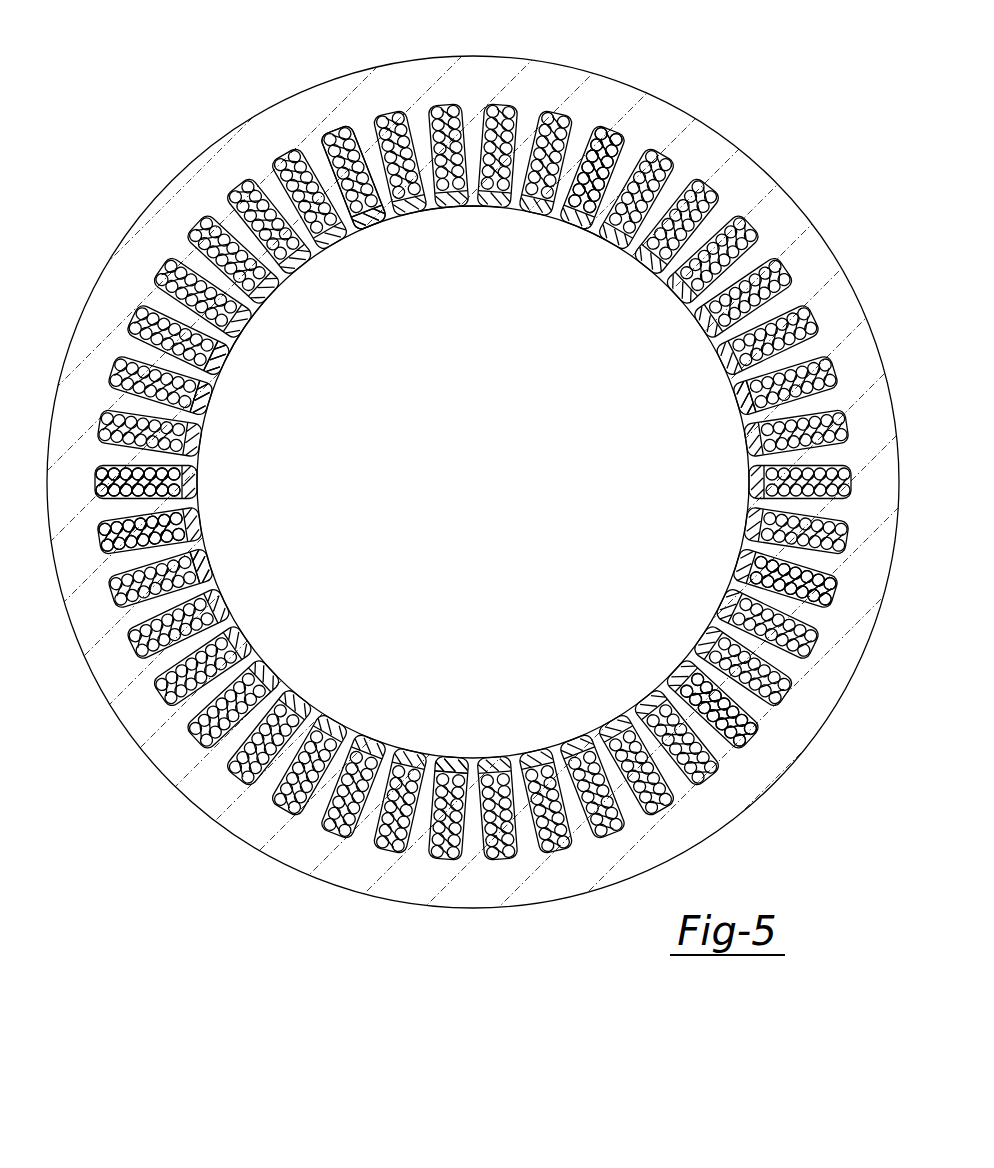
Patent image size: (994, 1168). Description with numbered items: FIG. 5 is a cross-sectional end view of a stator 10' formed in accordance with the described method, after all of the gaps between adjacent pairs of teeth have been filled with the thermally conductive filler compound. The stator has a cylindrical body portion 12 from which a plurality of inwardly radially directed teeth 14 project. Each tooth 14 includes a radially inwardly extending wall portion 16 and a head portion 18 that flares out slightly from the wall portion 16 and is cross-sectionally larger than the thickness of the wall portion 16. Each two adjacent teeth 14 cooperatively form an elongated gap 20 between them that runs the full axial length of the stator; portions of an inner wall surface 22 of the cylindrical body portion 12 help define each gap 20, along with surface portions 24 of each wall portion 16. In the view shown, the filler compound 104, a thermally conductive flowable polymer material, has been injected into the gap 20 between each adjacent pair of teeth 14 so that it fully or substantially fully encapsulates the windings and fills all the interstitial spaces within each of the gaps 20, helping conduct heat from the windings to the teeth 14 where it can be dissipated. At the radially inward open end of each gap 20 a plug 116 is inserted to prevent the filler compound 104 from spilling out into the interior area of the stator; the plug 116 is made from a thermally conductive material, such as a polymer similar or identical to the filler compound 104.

The stator 10' is at (497, 584).
The cylindrical body portion 12 is at (776, 205).
The teeth 14 is at (597, 230).
The wall portion 16 is at (466, 150).
The head portion 18 is at (690, 318).
The gap 20 is at (399, 122).
The inner wall surface 22 is at (326, 162).
The surface portions 24 is at (214, 344).
The filler compound 104 is at (606, 134).
The plug 116 is at (378, 222).